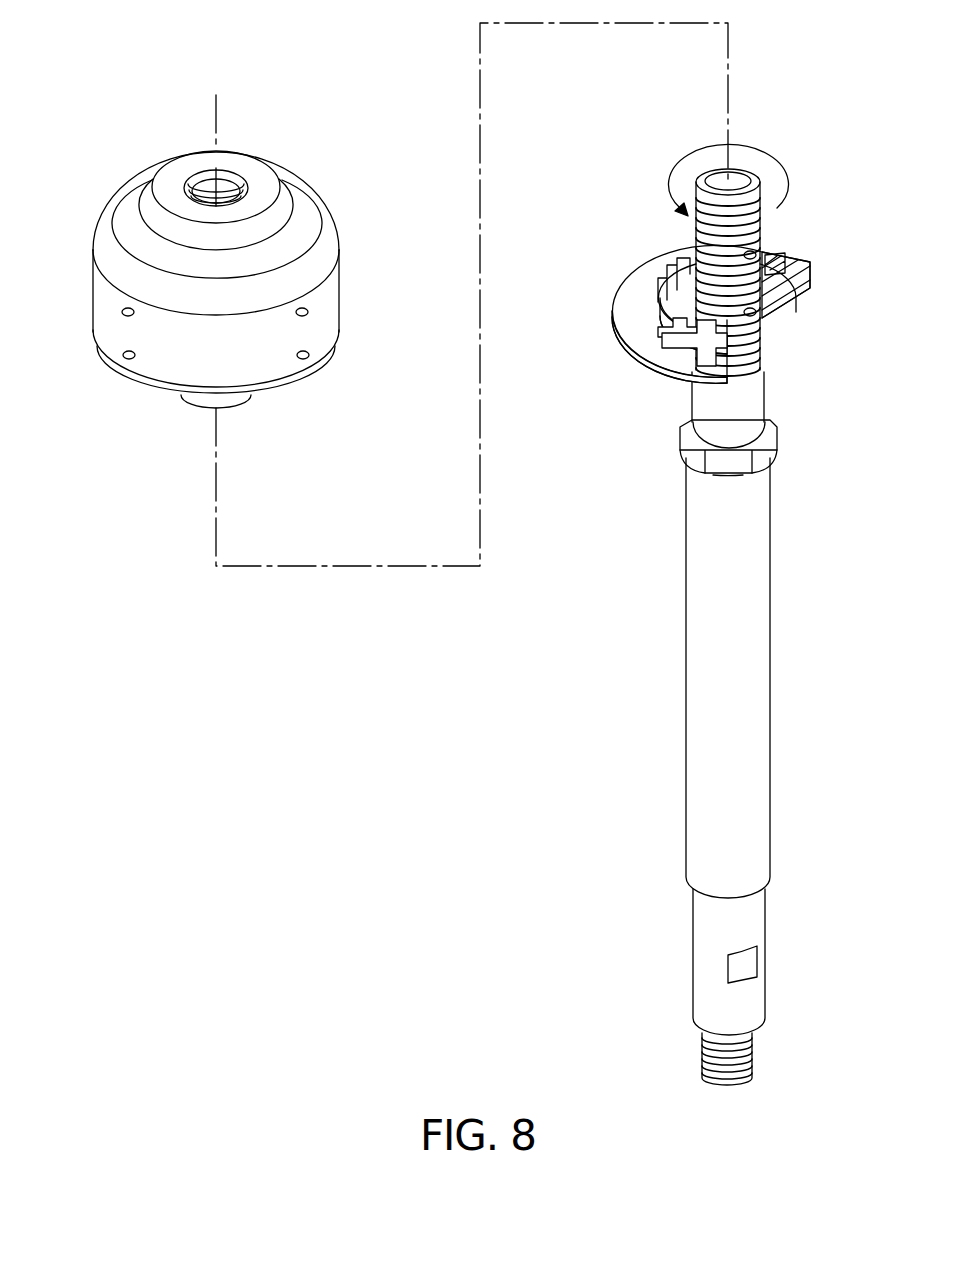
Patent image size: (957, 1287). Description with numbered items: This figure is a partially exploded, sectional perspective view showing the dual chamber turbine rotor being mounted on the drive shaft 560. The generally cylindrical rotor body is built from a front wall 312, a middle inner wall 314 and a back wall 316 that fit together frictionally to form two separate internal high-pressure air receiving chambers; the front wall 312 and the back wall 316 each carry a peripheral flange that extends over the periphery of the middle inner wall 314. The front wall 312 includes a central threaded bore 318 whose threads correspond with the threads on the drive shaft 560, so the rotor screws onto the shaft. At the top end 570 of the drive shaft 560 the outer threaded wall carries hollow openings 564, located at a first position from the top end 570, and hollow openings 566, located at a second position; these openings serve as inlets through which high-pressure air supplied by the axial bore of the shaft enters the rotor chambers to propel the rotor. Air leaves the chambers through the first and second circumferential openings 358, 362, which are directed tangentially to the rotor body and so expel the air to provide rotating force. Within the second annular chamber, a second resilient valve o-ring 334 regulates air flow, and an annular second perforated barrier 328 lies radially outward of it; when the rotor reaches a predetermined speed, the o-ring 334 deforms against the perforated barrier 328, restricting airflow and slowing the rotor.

The front wall 312 is at (322, 243).
The middle inner wall 314 is at (108, 331).
The back wall 316 is at (646, 362).
The central threaded bore 318 is at (201, 180).
The second perforated barrier 328 is at (658, 302).
The second resilient valve o-ring 334 is at (812, 276).
The first circumferential openings 358 is at (122, 312).
The second circumferential openings 362 is at (129, 359).
The drive shaft 560 is at (762, 340).
The hollow openings 564 is at (756, 254).
The hollow openings 566 is at (756, 312).
The top end 570 is at (717, 173).